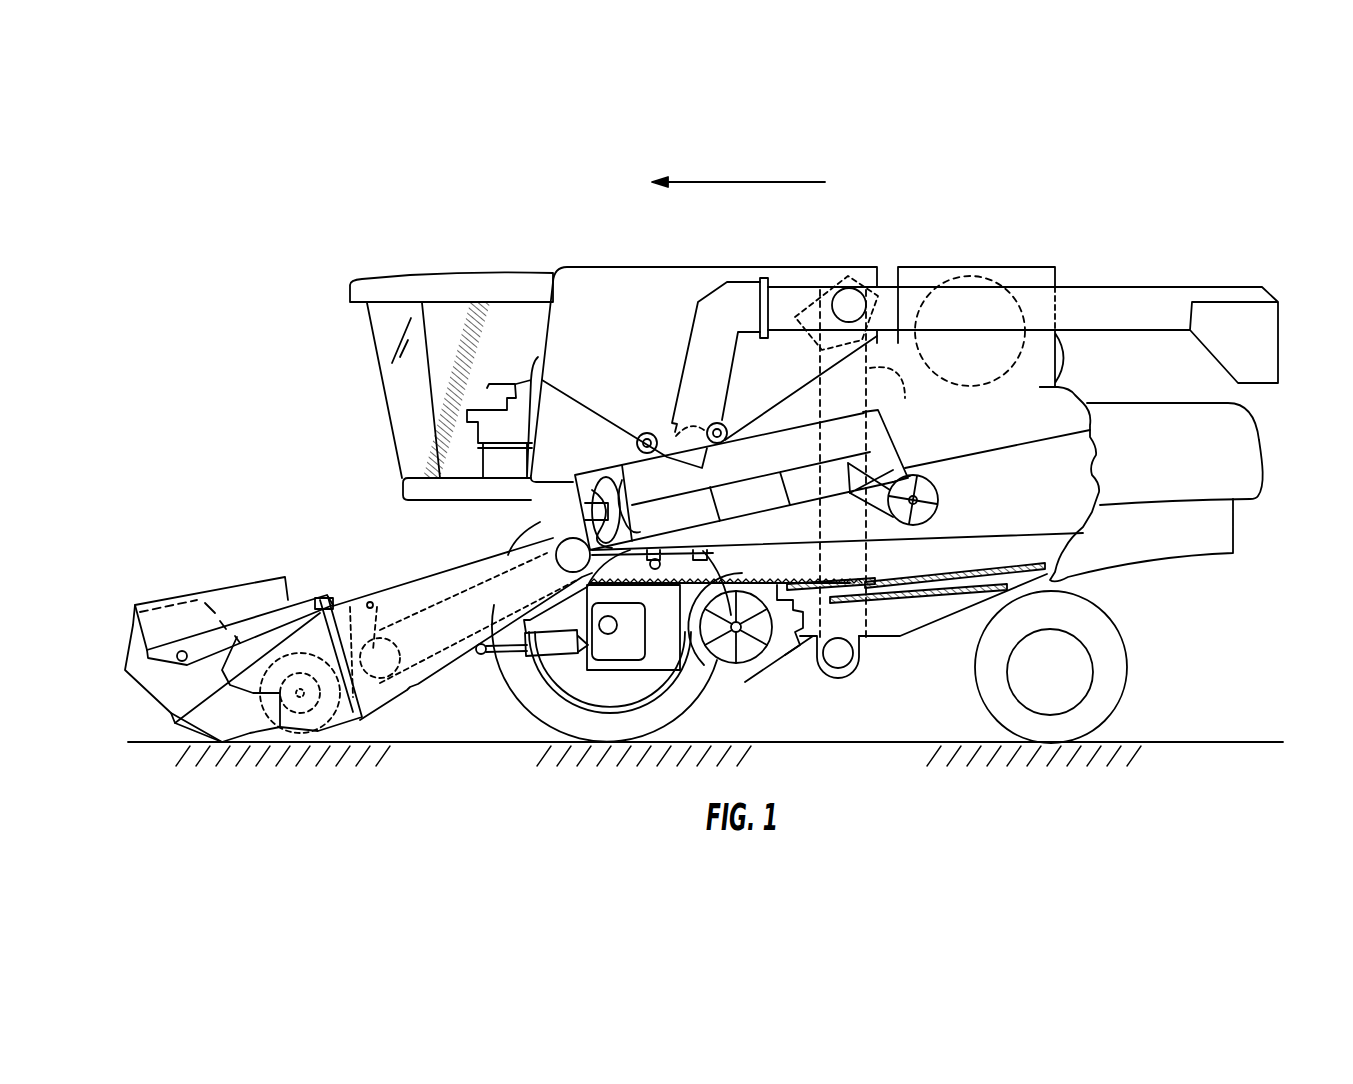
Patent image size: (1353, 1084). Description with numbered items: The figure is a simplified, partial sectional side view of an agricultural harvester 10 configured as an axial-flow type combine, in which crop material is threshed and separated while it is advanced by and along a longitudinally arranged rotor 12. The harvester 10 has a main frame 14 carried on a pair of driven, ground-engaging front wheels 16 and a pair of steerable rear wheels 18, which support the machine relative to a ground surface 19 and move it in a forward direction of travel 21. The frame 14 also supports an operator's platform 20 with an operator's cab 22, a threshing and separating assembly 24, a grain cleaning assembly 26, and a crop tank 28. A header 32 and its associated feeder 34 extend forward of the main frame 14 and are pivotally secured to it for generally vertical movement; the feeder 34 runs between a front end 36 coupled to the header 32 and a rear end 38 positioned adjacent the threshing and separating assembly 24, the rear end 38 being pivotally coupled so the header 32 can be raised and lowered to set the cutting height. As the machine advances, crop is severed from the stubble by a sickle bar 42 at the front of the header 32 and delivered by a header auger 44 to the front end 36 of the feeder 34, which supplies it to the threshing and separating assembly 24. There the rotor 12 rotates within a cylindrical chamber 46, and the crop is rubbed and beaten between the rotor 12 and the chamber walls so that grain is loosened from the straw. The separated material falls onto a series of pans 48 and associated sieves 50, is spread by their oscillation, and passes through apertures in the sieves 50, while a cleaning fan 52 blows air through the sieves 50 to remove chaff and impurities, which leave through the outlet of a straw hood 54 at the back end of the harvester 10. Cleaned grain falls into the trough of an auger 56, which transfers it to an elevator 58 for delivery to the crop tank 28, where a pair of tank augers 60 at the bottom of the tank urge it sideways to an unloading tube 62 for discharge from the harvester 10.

The agricultural harvester 10 is at (407, 226).
The rotor 12 is at (607, 490).
The main frame 14 is at (1062, 582).
The front wheels 16 is at (548, 710).
The rear wheels 18 is at (1120, 680).
The ground surface 19 is at (157, 742).
The operator's platform 20 is at (404, 491).
The forward direction of travel 21 is at (762, 181).
The operator's cab 22 is at (398, 382).
The threshing and separating assembly 24 is at (735, 470).
The grain cleaning assembly 26 is at (808, 673).
The crop tank 28 is at (648, 266).
The header 32 is at (177, 586).
The feeder 34 is at (385, 575).
The front end 36 is at (325, 646).
The rear end 38 is at (545, 518).
The sickle bar 42 is at (176, 733).
The header auger 44 is at (313, 700).
The cylindrical chamber 46 is at (780, 443).
The pans 48 is at (745, 580).
The sieves 50 is at (880, 582).
The cleaning fan 52 is at (714, 650).
The straw hood 54 is at (1253, 463).
The auger 56 is at (840, 662).
The elevator 58 is at (857, 456).
The tank augers 60 is at (645, 432).
The unloading tube 62 is at (1115, 300).